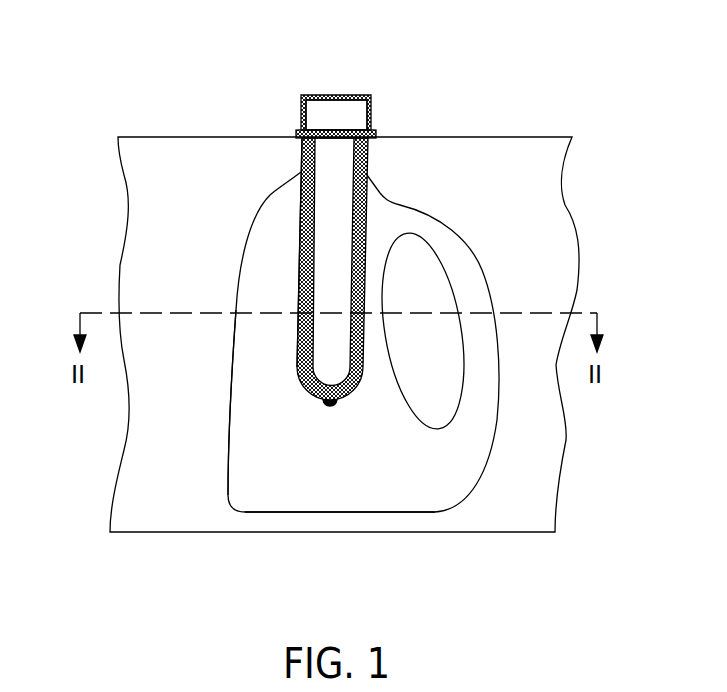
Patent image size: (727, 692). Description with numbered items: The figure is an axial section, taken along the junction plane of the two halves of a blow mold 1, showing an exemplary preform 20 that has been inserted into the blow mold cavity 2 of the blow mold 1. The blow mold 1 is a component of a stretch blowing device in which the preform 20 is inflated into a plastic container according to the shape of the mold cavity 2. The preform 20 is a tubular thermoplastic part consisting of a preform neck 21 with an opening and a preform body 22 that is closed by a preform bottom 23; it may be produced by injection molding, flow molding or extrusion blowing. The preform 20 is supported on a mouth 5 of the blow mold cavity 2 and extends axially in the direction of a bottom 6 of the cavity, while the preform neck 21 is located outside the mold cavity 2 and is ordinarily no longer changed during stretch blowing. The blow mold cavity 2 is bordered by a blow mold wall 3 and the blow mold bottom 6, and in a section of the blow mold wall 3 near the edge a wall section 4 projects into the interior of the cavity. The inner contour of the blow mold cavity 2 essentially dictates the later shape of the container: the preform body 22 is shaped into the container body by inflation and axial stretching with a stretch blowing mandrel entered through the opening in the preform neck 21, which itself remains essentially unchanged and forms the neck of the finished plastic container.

The blow mold 1 is at (504, 165).
The blow mold cavity 2 is at (262, 277).
The blow mold wall 3 is at (228, 430).
The wall section 4 is at (430, 290).
The mouth 5 is at (333, 107).
The blow mold bottom 6 is at (303, 512).
The preform 20 is at (302, 232).
The preform neck 21 is at (372, 118).
The preform body 22 is at (297, 343).
The preform bottom 23 is at (343, 401).